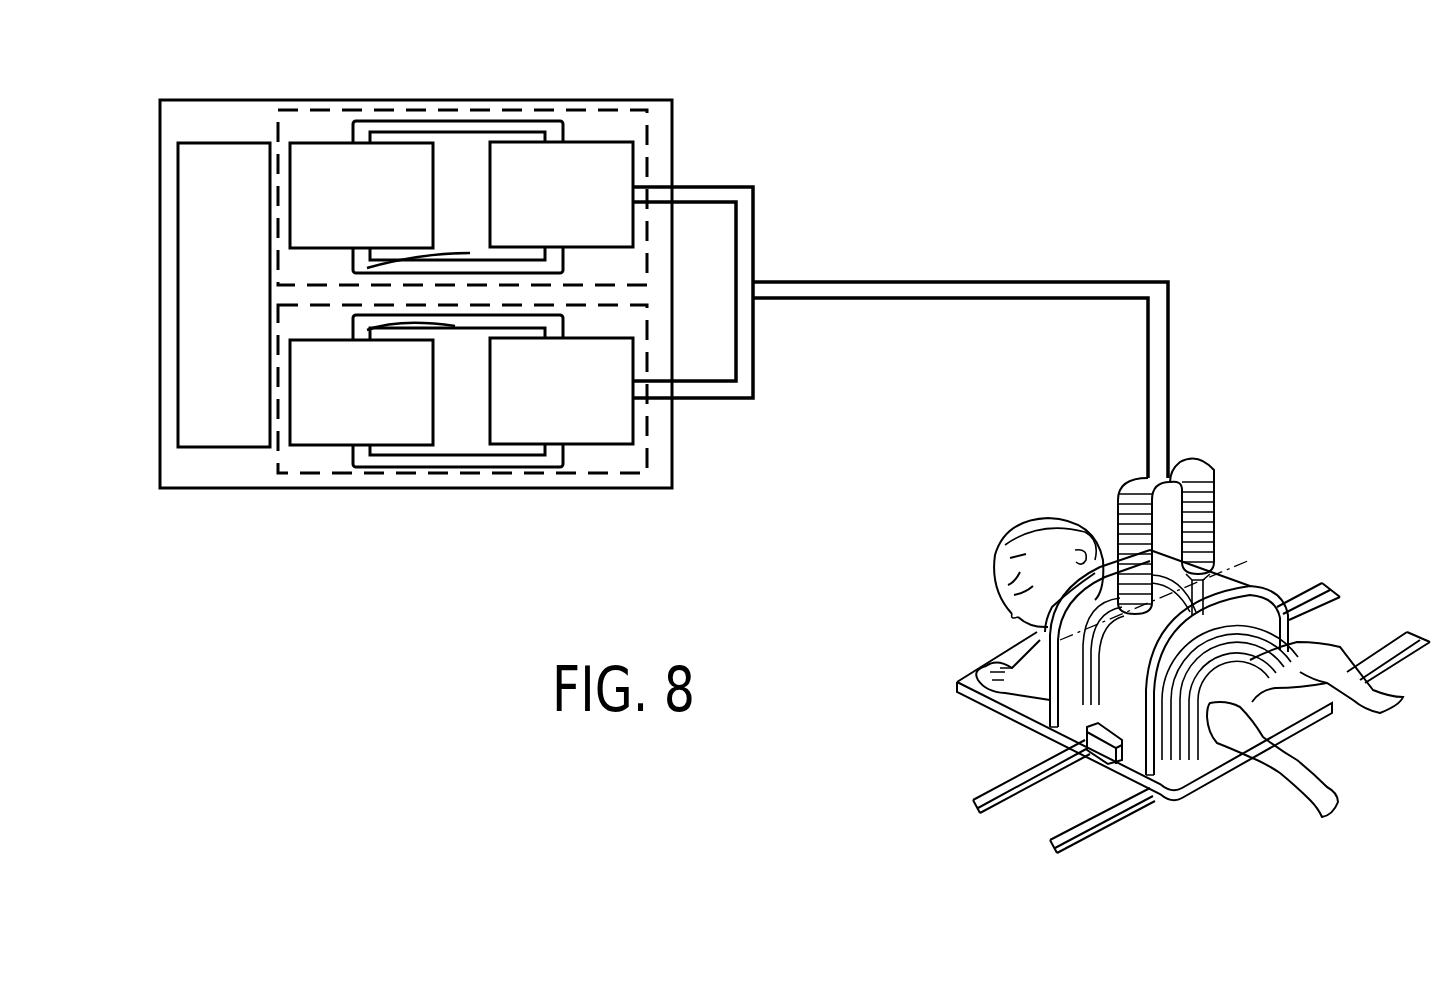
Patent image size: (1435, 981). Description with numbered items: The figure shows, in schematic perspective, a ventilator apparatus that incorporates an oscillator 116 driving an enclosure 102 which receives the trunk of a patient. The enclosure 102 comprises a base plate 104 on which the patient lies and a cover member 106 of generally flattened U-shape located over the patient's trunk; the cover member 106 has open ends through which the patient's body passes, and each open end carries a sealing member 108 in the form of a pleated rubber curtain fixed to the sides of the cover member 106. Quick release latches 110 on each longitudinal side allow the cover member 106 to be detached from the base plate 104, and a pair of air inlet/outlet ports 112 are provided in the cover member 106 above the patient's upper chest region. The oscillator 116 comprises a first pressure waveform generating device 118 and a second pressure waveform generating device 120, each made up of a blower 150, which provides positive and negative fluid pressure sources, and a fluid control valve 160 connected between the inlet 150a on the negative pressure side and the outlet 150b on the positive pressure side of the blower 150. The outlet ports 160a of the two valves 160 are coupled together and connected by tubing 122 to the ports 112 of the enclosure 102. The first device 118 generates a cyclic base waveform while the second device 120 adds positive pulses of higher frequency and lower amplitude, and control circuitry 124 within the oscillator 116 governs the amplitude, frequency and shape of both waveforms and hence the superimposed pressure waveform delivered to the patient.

The enclosure 102 is at (1262, 576).
The base plate 104 is at (1190, 792).
The cover member 106 is at (1083, 702).
The sealing member 108 is at (1285, 620).
The quick release latches 110 is at (1093, 753).
The air inlet/outlet ports 112 is at (1050, 627).
The oscillator 116 is at (397, 90).
The first pressure waveform generating device 118 is at (624, 128).
The second pressure waveform generating device 120 is at (625, 455).
The tubing 122 is at (1050, 268).
The control circuitry 124 is at (195, 424).
The blower 150 is at (418, 150).
The inlet 150a is at (358, 124).
The outlet 150b is at (470, 253).
The fluid control valve 160 is at (620, 152).
The outlet ports 160a is at (648, 197).